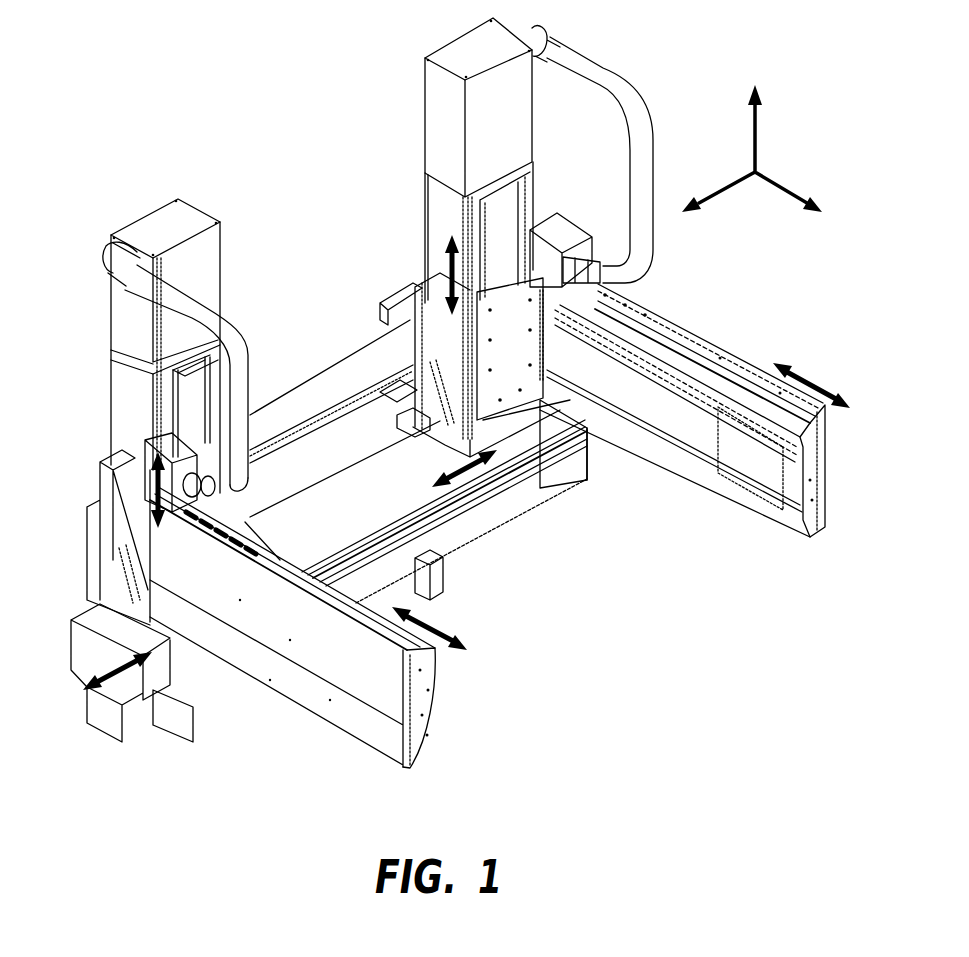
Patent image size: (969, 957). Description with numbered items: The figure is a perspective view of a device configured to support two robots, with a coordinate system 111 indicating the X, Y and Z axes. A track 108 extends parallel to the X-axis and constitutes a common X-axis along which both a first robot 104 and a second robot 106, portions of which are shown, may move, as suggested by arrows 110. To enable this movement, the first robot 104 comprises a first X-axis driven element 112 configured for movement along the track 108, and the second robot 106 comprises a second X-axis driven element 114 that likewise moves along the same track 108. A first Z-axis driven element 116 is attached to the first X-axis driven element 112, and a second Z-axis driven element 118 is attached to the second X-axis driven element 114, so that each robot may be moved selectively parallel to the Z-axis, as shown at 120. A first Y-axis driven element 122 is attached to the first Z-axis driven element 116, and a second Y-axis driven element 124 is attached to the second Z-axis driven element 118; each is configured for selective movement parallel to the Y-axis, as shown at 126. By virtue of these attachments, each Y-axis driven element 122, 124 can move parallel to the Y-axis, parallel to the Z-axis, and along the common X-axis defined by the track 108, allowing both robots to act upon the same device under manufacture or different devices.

The first robot 104 is at (101, 200).
The second robot 106 is at (399, 40).
The track 108 is at (421, 558).
The arrows 110 is at (110, 667).
The coordinate system 111 is at (757, 137).
The first X-axis driven element 112 is at (87, 570).
The second X-axis driven element 114 is at (412, 403).
The first Z-axis driven element 116 is at (108, 417).
The second Z-axis driven element 118 is at (425, 207).
The Z-axis movement 120 is at (152, 455).
The first Y-axis driven element 122 is at (313, 713).
The second Y-axis driven element 124 is at (737, 490).
The Y-axis movement 126 is at (432, 619).